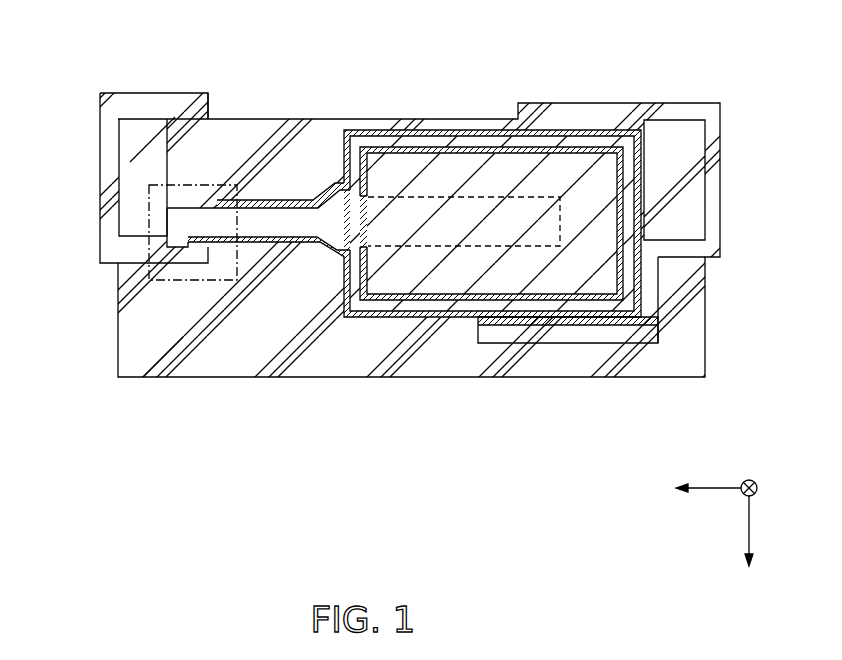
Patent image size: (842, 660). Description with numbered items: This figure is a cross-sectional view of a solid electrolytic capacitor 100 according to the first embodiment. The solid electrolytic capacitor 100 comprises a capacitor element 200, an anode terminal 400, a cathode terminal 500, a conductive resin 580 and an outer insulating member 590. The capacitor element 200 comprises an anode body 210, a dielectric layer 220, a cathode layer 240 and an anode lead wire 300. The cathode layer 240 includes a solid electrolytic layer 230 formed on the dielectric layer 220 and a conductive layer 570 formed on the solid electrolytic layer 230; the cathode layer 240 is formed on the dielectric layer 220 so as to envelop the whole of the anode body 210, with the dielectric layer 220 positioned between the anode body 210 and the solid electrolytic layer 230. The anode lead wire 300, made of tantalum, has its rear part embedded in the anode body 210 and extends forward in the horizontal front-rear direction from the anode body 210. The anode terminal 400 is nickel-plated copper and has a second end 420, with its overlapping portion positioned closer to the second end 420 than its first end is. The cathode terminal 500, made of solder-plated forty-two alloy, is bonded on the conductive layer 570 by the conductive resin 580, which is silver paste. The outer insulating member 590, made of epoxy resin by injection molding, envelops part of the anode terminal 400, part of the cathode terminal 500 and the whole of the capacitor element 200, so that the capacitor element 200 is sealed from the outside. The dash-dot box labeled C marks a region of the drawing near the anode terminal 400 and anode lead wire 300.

The solid electrolytic capacitor 100 is at (794, 44).
The capacitor element 200 is at (469, 227).
The anode body 210 is at (415, 167).
The dielectric layer 220 is at (496, 150).
The solid electrolytic layer 230 is at (492, 185).
The cathode layer 240 is at (503, 163).
The anode lead wire 300 is at (262, 225).
The anode terminal 400 is at (108, 150).
The second end 420 is at (208, 103).
The cathode terminal 500 is at (715, 188).
The conductive layer 570 is at (626, 133).
The conductive resin 580 is at (555, 322).
The outer insulating member 590 is at (155, 137).
The region C is at (143, 272).